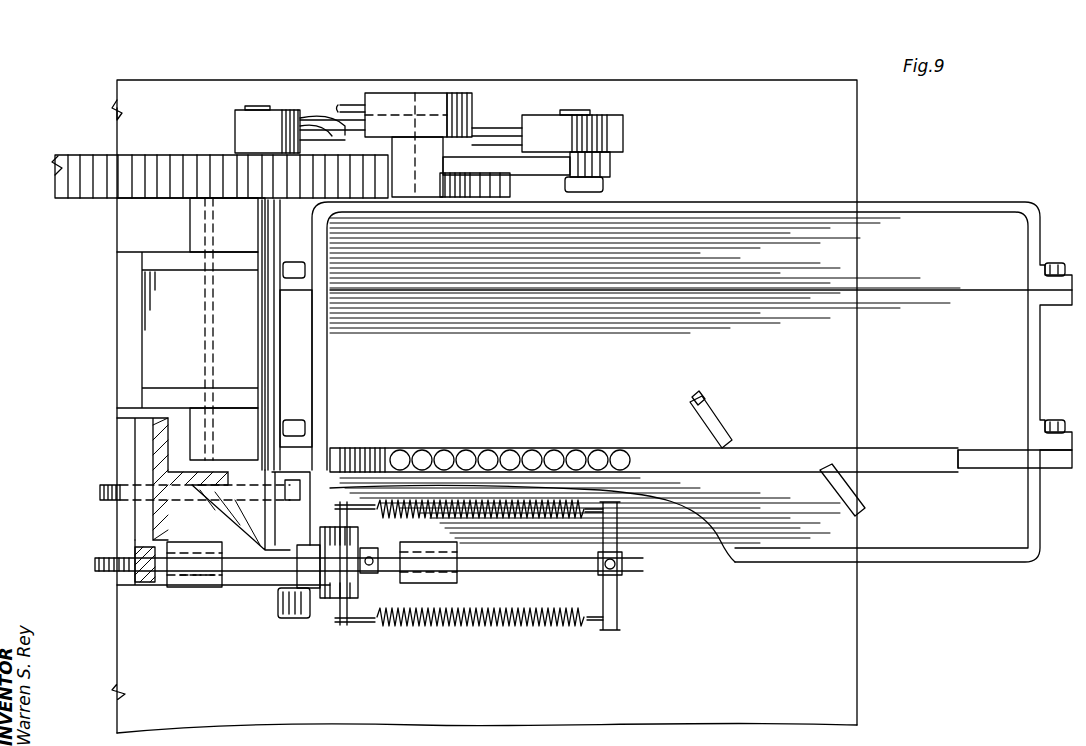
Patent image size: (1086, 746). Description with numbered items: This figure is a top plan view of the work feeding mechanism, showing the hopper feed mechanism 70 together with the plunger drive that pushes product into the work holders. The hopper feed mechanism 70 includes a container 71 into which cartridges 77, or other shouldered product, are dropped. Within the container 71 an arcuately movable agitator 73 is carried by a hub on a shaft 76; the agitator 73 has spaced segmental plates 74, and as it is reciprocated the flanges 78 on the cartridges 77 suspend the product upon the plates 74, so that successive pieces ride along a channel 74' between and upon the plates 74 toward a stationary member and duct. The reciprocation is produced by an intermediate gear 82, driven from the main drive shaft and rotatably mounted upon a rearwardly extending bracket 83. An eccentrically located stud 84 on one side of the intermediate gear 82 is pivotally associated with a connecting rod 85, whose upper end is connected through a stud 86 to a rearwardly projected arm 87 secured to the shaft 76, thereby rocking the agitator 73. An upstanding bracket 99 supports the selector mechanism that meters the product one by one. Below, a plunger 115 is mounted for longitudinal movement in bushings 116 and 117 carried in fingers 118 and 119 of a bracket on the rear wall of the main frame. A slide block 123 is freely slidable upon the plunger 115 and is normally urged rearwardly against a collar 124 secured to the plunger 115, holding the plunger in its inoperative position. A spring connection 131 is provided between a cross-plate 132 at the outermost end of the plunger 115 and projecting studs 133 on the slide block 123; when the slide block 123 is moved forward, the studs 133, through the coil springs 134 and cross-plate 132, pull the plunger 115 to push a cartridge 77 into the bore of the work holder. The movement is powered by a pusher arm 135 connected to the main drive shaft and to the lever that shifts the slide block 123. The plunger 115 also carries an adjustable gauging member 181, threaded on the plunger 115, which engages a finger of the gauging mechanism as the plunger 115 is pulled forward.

The hopper feed mechanism 70 is at (696, 193).
The container 71 is at (915, 205).
The agitator 73 is at (845, 444).
The segmental plates 74 is at (644, 435).
The channel 74' is at (938, 441).
The shaft 76 is at (437, 93).
The cartridges 77 is at (718, 423).
The flanges 78 is at (690, 404).
The intermediate gear 82 is at (70, 170).
The bracket 83 is at (163, 258).
The stud 84 is at (262, 108).
The connecting rod 85 is at (495, 130).
The stud 86 is at (605, 115).
The arm 87 is at (525, 168).
The upstanding bracket 99 is at (160, 452).
The plunger 115 is at (528, 562).
The bushing 116 is at (187, 590).
The bushing 117 is at (432, 573).
The finger 118 is at (188, 548).
The finger 119 is at (430, 548).
The slide block 123 is at (330, 600).
The collar 124 is at (375, 550).
The spring connection 131 is at (516, 636).
The cross-plate 132 is at (620, 600).
The studs 133 is at (345, 625).
The coil springs 134 is at (478, 515).
The pusher arm 135 is at (110, 500).
The adjustable gauging member 181 is at (135, 575).